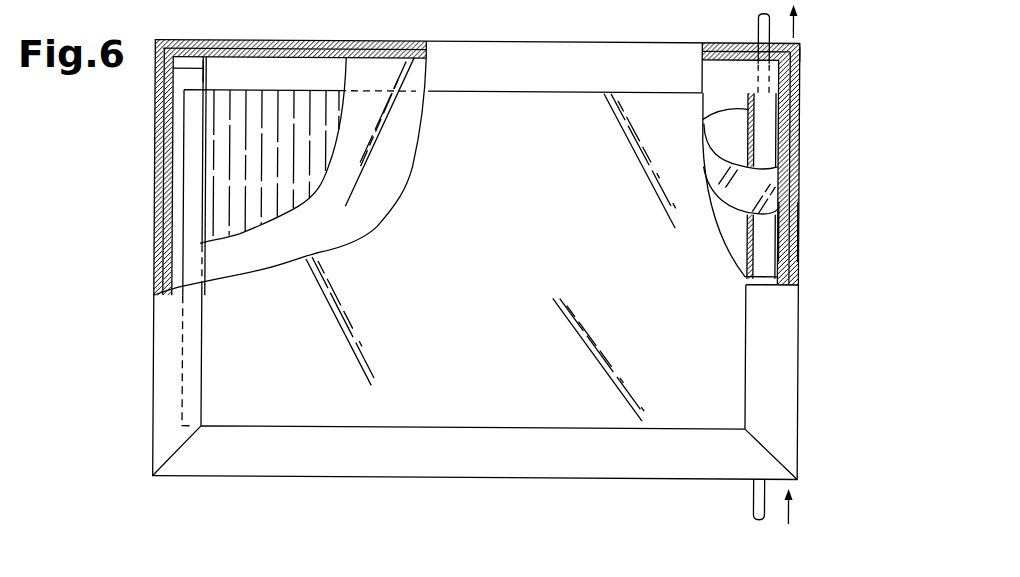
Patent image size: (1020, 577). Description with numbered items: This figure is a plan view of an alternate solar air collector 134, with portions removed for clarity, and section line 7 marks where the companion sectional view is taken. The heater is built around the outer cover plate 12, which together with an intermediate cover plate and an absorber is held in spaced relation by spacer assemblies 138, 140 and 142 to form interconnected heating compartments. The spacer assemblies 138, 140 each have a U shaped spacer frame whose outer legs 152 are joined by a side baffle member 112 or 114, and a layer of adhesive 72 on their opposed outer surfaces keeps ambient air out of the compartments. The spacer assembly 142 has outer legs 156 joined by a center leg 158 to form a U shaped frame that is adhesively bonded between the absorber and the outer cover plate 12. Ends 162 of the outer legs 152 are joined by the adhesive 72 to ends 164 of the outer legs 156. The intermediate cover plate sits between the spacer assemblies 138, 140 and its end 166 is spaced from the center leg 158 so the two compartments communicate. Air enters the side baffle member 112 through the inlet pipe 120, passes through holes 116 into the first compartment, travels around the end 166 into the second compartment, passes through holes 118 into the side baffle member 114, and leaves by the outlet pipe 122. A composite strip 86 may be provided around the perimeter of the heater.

The outer cover plate 12 is at (709, 307).
The section line 7- 7 is at (190, 350).
The adhesive 72 is at (206, 58).
The composite strip 86 is at (158, 242).
The side baffle member 112 is at (783, 231).
The side baffle member 114 is at (779, 118).
The holes 116 is at (748, 244).
The holes 118 is at (748, 130).
The inlet pipe 120 is at (756, 497).
The outlet pipe 122 is at (757, 32).
The solar air collector 134 is at (820, 56).
The spacer assembly 138 is at (790, 249).
The spacer assembly 140 is at (788, 146).
The spacer assembly 142 is at (168, 176).
The outer legs 152 is at (289, 64).
The outer legs 156 is at (186, 62).
The center leg 158 is at (183, 133).
The ends 162 is at (204, 72).
The ends 164 is at (200, 77).
The end 166 is at (194, 269).